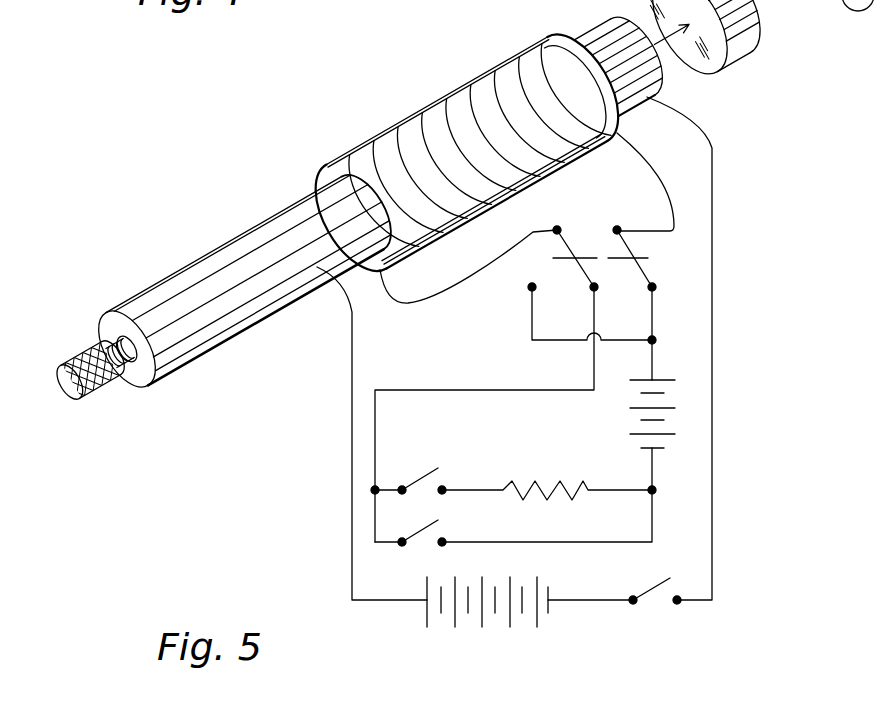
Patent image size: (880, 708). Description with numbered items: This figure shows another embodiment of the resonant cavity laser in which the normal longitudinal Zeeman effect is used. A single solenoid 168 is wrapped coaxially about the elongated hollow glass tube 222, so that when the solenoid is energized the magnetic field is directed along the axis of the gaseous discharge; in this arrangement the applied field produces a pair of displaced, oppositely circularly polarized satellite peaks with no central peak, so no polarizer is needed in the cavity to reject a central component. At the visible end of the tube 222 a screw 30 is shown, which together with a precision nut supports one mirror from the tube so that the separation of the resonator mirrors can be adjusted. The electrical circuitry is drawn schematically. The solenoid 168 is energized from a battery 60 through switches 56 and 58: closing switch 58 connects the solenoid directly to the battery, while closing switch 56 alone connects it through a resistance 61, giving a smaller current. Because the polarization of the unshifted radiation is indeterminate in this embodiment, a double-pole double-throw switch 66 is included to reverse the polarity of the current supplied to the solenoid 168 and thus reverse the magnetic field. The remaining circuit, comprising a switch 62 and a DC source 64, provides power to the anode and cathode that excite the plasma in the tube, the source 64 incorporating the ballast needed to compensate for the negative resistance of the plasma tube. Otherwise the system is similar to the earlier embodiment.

The screw 30 is at (85, 360).
The tube 222 is at (232, 255).
The solenoid 168 is at (449, 102).
The double-pole double-throw switch 66 is at (637, 250).
The battery 60 is at (624, 408).
The switch 56 is at (437, 475).
The switch 58 is at (437, 531).
The resistance 61 is at (563, 459).
The DC source 64 is at (510, 578).
The switch 62 is at (655, 580).